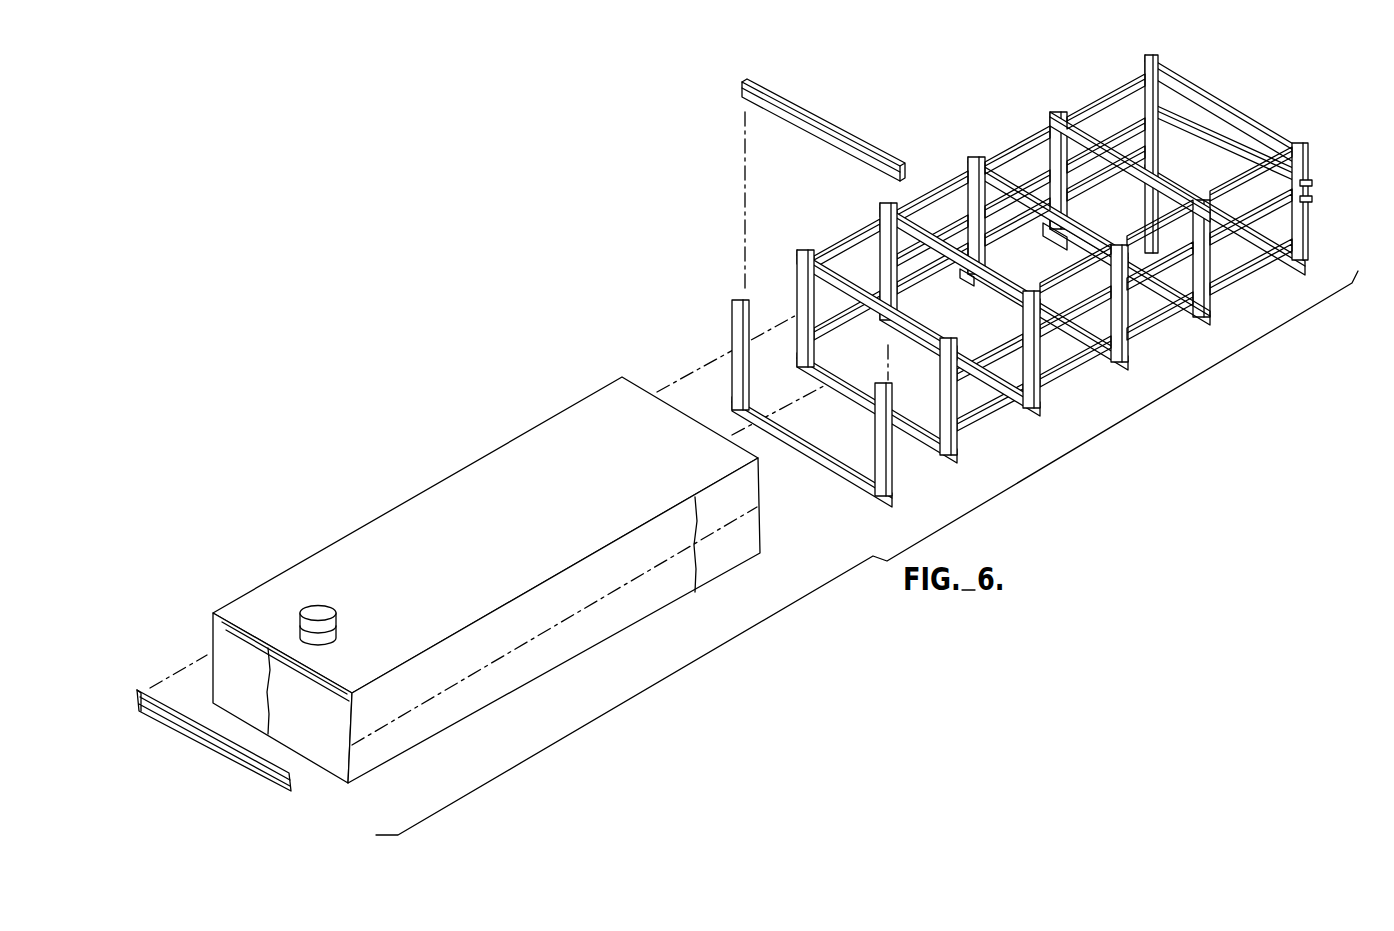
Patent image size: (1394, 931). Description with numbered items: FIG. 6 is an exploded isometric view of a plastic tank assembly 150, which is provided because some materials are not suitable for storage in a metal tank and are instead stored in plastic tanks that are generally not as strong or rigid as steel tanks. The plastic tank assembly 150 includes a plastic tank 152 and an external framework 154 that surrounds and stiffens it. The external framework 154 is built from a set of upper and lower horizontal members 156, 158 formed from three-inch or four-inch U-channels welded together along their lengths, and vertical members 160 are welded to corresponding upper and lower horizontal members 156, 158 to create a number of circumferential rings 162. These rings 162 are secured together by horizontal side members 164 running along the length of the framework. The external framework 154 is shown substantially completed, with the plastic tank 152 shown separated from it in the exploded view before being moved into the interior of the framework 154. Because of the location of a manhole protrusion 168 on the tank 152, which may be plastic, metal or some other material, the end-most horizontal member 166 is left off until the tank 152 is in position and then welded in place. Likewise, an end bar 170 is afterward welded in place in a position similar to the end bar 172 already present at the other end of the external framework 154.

The plastic tank assembly 150 is at (566, 191).
The plastic tank 152 is at (438, 481).
The external framework 154 is at (1020, 96).
The upper horizontal member 156 is at (993, 157).
The lower horizontal member 158 is at (1160, 308).
The vertical member 160 is at (1049, 150).
The circumferential ring 162 is at (832, 238).
The horizontal side member 164 is at (957, 216).
The end-most horizontal member 166 is at (816, 126).
The manhole protrusion 168 is at (337, 621).
The end bar 170 is at (204, 740).
The end bar 172 is at (1312, 178).